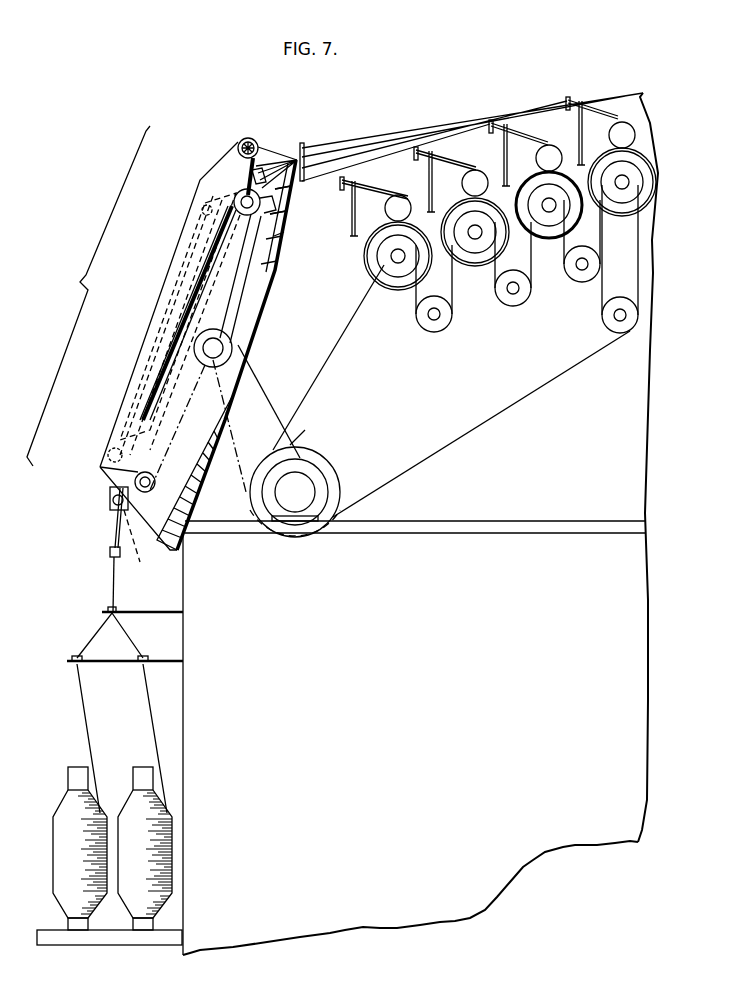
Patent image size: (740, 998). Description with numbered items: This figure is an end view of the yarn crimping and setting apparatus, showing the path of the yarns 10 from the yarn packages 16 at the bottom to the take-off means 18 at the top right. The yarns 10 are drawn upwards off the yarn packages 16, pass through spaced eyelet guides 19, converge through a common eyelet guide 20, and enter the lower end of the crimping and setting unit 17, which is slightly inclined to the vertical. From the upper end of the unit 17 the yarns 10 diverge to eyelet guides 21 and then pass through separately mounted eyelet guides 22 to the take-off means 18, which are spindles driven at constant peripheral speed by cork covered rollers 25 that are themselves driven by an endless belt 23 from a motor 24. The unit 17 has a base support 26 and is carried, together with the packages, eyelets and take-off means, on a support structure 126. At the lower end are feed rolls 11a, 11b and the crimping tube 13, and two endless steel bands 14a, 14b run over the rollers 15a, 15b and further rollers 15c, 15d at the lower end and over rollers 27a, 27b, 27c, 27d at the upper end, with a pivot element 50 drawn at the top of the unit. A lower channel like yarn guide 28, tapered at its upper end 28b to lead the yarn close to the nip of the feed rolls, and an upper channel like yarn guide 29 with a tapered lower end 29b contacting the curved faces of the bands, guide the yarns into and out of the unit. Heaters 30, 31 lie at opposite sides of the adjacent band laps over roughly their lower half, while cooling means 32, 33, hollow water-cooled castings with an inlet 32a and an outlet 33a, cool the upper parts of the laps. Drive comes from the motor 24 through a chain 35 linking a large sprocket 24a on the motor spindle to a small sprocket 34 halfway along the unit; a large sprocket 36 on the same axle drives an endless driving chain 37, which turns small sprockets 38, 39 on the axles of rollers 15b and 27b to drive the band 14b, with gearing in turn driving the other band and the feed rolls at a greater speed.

The yarns 10 is at (113, 580).
The feed roll 11a is at (110, 498).
The feed roll 11b is at (170, 545).
The crimping tube 13 is at (118, 480).
The endless band 14a is at (130, 385).
The endless band 14b is at (172, 340).
The roller 15a is at (125, 470).
The roller 15b is at (203, 527).
The roller 15c is at (113, 447).
The roller 15d is at (205, 493).
The yarn packages 16 is at (143, 803).
The crimping and setting unit 17 is at (88, 296).
The take-off means 18 is at (547, 156).
The eyelet guides 19 is at (80, 658).
The common eyelet guide 20 is at (108, 610).
The eyelet guides 21 is at (300, 155).
The eyelet guides 22 is at (341, 178).
The endless belt 23 is at (313, 392).
The motor 24 is at (297, 490).
The large sprocket 24a is at (298, 442).
The feed rollers 25 is at (475, 257).
The base support 26 is at (228, 380).
The roller 27a is at (234, 200).
The roller 27b is at (266, 206).
The roller 27c is at (203, 211).
The roller 27d is at (283, 250).
The lower channel like yarn guide 28 is at (110, 550).
The upper end of lower guide 28b is at (141, 546).
The upper channel like yarn guide 29 is at (250, 165).
The lower end of upper guide 29b is at (250, 175).
The heater 30 is at (170, 318).
The heater 31 is at (185, 412).
The cooling means 32 is at (190, 262).
The inlet 32a is at (178, 300).
The cooling means 33 is at (270, 285).
The outlet 33a is at (213, 230).
The small sprocket 34 is at (216, 350).
The chain 35 is at (305, 430).
The large sprocket 36 is at (228, 336).
The endless driving chain 37 is at (247, 307).
The small sprocket 38 is at (157, 484).
The small sprocket 39 is at (283, 238).
The bolt 50 is at (247, 138).
The support structure 126 is at (389, 586).